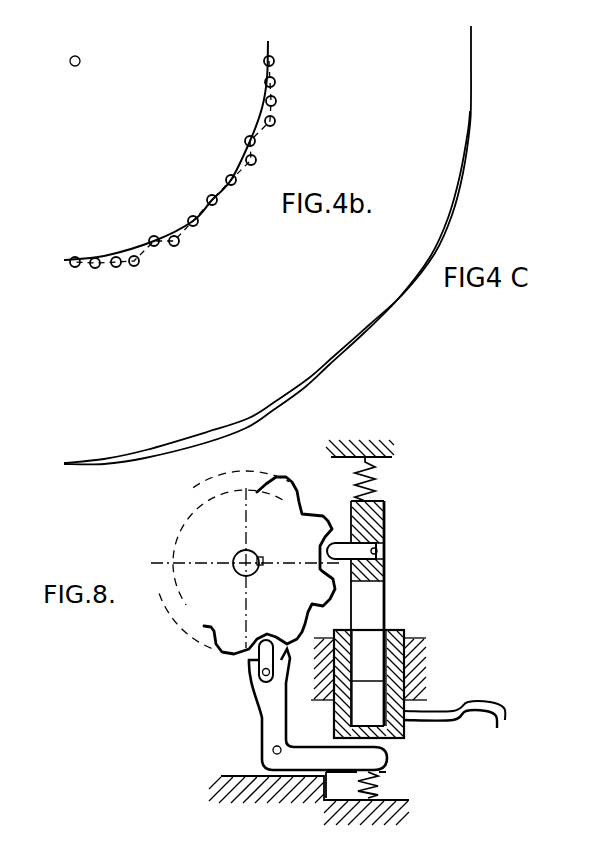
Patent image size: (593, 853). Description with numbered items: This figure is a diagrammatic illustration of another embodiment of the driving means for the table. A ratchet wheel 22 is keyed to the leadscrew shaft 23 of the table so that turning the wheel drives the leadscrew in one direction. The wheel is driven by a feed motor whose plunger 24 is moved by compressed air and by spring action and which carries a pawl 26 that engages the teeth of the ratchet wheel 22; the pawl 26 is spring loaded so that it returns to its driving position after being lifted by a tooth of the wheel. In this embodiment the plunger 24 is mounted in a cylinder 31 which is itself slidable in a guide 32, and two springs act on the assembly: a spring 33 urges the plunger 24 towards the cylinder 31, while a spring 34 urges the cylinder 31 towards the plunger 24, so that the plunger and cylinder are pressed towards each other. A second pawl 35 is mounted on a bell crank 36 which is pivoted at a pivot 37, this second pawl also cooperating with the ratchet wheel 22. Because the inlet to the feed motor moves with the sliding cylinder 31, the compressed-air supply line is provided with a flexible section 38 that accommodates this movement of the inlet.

The ratchet wheel 22 is at (258, 512).
The leadscrew shaft 23 is at (229, 555).
The plunger 24 is at (367, 603).
The pawl 26 is at (380, 530).
The cylinder 31 is at (403, 627).
The guide 32 is at (407, 668).
The spring 33 is at (369, 483).
The spring 34 is at (370, 773).
The second pawl 35 is at (256, 650).
The bell crank 36 is at (266, 722).
The pivot 37 is at (273, 751).
The flexible section 38 is at (433, 709).